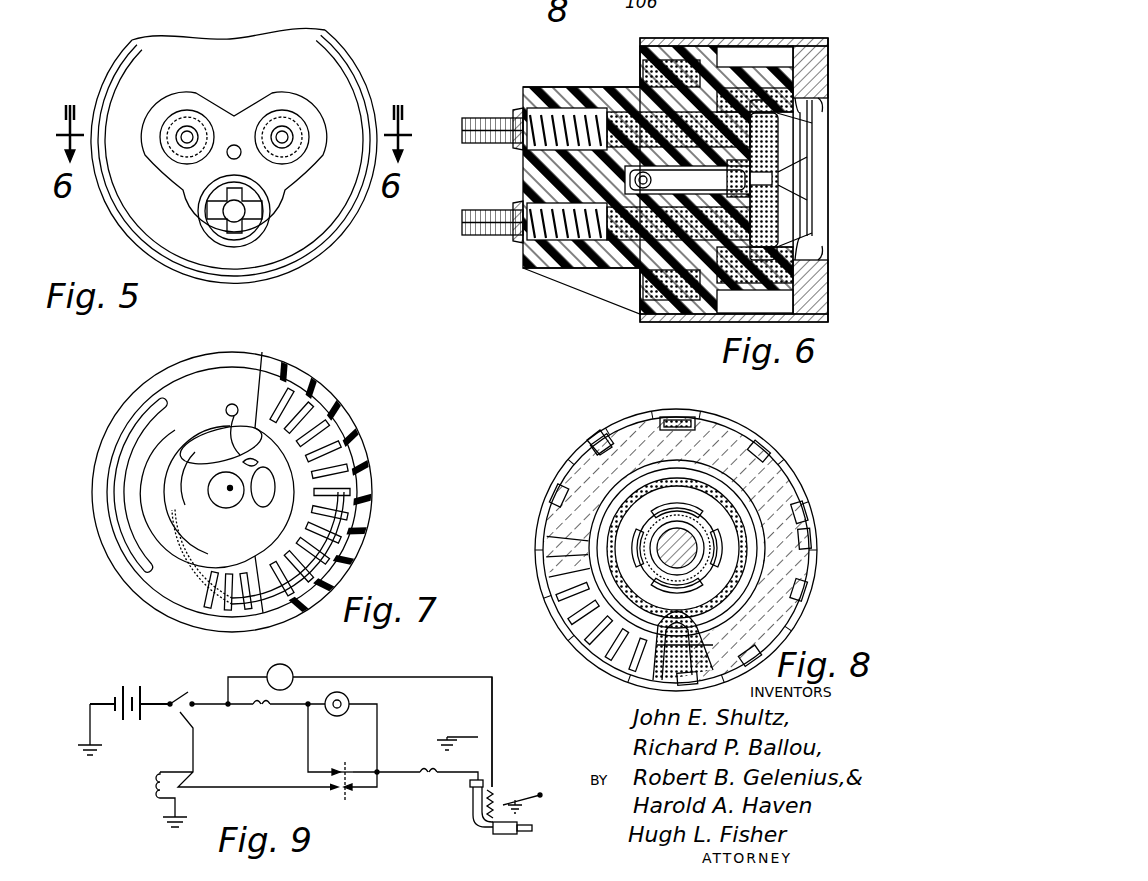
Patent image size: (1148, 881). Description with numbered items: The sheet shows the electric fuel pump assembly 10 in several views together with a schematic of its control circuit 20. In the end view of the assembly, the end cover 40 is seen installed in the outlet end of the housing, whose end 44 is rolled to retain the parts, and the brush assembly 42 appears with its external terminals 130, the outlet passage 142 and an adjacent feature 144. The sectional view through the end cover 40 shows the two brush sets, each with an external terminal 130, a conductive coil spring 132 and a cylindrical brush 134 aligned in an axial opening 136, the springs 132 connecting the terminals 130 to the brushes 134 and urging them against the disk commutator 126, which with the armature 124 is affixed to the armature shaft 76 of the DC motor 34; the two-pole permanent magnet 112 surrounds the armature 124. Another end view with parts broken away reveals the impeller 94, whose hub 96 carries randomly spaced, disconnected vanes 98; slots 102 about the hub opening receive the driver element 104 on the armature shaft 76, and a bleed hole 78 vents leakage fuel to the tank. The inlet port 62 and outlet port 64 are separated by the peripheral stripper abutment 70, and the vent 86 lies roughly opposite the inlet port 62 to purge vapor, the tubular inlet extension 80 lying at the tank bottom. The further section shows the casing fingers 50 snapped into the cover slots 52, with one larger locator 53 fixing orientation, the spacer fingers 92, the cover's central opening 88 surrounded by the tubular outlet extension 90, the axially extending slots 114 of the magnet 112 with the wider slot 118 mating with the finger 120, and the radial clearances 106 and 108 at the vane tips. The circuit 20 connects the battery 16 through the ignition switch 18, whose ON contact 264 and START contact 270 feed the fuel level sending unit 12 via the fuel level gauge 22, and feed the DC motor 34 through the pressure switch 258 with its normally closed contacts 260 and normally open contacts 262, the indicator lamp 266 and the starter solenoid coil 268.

In FIG. 5, the electric fuel pump assembly 10 is at (378, 82).
In FIG. 6, the electric fuel pump assembly 10 is at (810, 34).
In FIG. 7, the electric fuel pump assembly 10 is at (116, 398).
In FIG. 9, the electric fuel pump assembly 10 is at (494, 838).
In FIG. 9, the fuel level sending unit 12 is at (510, 796).
In FIG. 9, the battery 16 is at (120, 690).
In FIG. 9, the ignition switch 18 is at (176, 693).
In FIG. 9, the control circuit 20 is at (386, 730).
In FIG. 9, the fuel level gauge 22 is at (290, 667).
In FIG. 6, the DC motor 34 is at (828, 226).
In FIG. 5, the end cover 40 is at (330, 90).
In FIG. 6, the end cover 40 is at (662, 38).
In FIG. 5, the brush assembly 42 is at (162, 142).
In FIG. 6, the brush assembly 42 is at (505, 250).
In FIG. 6, the end of the housing 44 is at (647, 320).
In FIG. 8, the fingers 50 is at (552, 507).
In FIG. 6, the slots 52 is at (731, 38).
In FIG. 8, the slots 52 is at (563, 478).
In FIG. 8, the larger finger and slot locator 53 is at (745, 458).
In FIG. 7, the inlet port 62 is at (207, 590).
In FIG. 8, the inlet port 62 is at (647, 677).
In FIG. 7, the outlet port 64 is at (330, 502).
In FIG. 8, the outlet port 64 is at (590, 573).
In FIG. 7, the peripheral stripper abutment 70 is at (303, 585).
In FIG. 8, the peripheral stripper abutment 70 is at (607, 645).
In FIG. 7, the armature shaft 76 is at (238, 496).
In FIG. 8, the armature shaft 76 is at (662, 562).
In FIG. 7, the bleed hole 78 is at (228, 488).
In FIG. 7, the tubular inlet extension 80 is at (160, 572).
In FIG. 7, the vent 86 is at (234, 405).
In FIG. 8, the central opening 88 is at (615, 500).
In FIG. 8, the tubular outlet extension 90 is at (592, 544).
In FIG. 8, the spacer fingers 92 is at (582, 458).
In FIG. 7, the impeller 94 is at (327, 518).
In FIG. 7, the hub 96 is at (322, 458).
In FIG. 7, the vanes 98 is at (322, 420).
In FIG. 8, the vanes 98 is at (595, 627).
In FIG. 7, the slots 102 is at (260, 508).
In FIG. 8, the slots 102 is at (713, 543).
In FIG. 8, the driver element 104 is at (712, 557).
In FIG. 8, the radial clearance 106 is at (613, 643).
In FIG. 8, the radial clearance 108 is at (558, 613).
In FIG. 6, the permanent magnet 112 is at (818, 75).
In FIG. 8, the permanent magnet 112 is at (803, 488).
In FIG. 8, the slots 114 is at (607, 432).
In FIG. 8, the slot 118 is at (665, 416).
In FIG. 8, the finger 120 is at (678, 416).
In FIG. 5, the armature 124 is at (112, 77).
In FIG. 6, the armature 124 is at (815, 147).
In FIG. 6, the disk commutator 126 is at (757, 103).
In FIG. 5, the external terminal 130 is at (278, 132).
In FIG. 6, the external terminal 130 is at (485, 208).
In FIG. 6, the coil spring 132 is at (566, 112).
In FIG. 8, the coil spring 132 is at (733, 414).
In FIG. 6, the brush 134 is at (633, 145).
In FIG. 6, the axial opening 136 is at (617, 110).
In FIG. 5, the outlet passage 142 is at (222, 242).
In FIG. 5, the cross member 144 is at (248, 228).
In FIG. 9, the pressure switch 258 is at (354, 790).
In FIG. 9, the normally closed contacts 260 is at (334, 786).
In FIG. 9, the normally open contacts 262 is at (345, 768).
In FIG. 9, the ON contact 264 is at (192, 703).
In FIG. 9, the indicator lamp 266 is at (345, 692).
In FIG. 9, the starter solenoid coil 268 is at (150, 790).
In FIG. 9, the START contact 270 is at (181, 737).